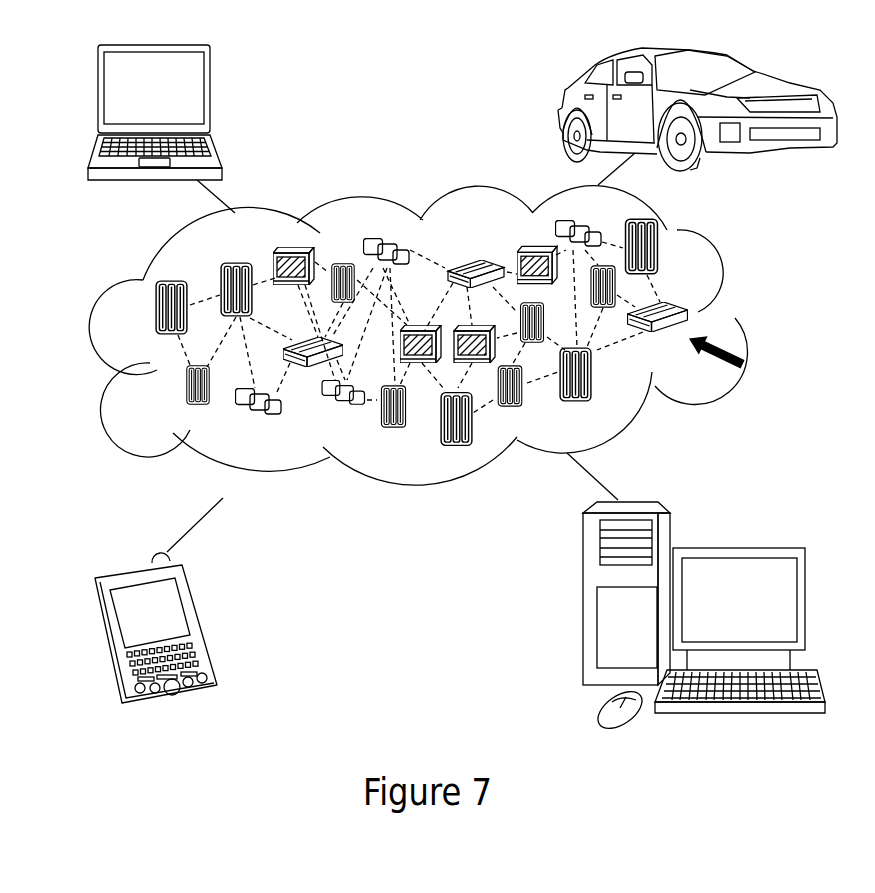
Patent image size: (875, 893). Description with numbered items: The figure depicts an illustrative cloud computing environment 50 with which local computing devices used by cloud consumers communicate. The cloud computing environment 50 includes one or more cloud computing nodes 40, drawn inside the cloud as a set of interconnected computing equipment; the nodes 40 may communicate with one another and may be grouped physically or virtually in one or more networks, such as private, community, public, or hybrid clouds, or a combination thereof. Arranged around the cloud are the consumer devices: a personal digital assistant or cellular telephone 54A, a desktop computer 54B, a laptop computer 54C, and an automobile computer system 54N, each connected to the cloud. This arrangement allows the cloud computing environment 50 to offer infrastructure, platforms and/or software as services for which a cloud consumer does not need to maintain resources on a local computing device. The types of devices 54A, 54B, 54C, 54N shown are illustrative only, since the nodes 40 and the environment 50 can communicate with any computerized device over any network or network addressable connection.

The personal digital assistant (PDA) or cellular telephone 54A is at (203, 628).
The desktop computer 54B is at (738, 548).
The laptop computer 54C is at (210, 98).
The automobile computer system 54N is at (562, 108).
The cloud computing environment 50 is at (738, 315).
The cloud computing nodes 40 is at (731, 358).